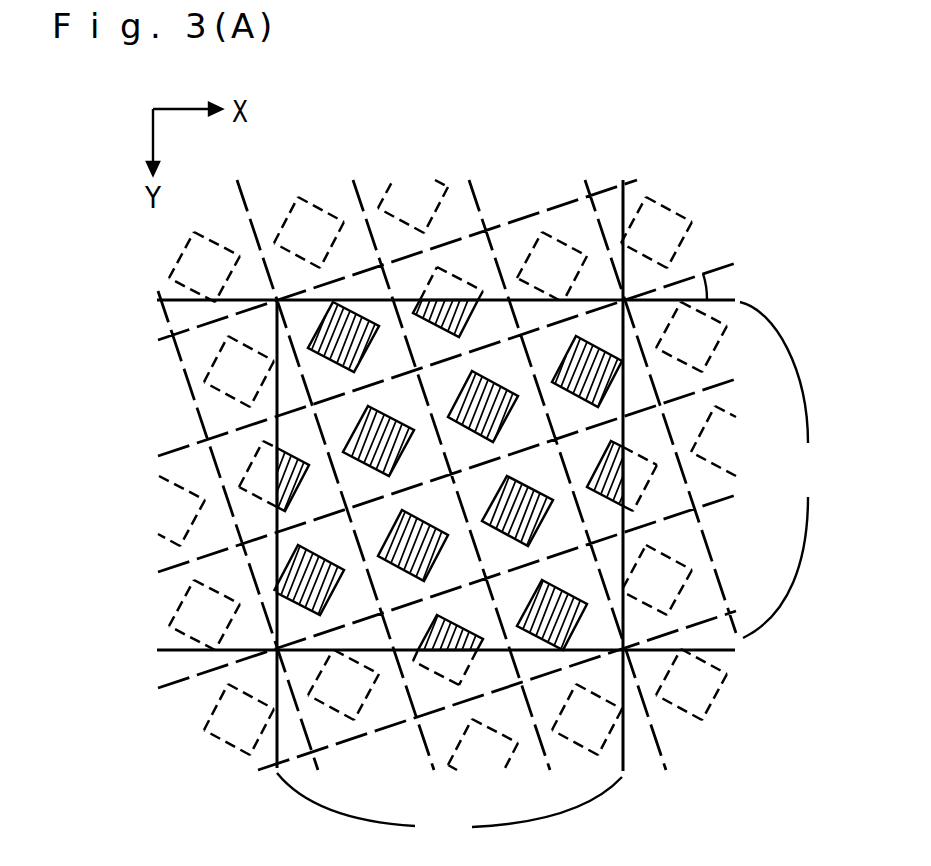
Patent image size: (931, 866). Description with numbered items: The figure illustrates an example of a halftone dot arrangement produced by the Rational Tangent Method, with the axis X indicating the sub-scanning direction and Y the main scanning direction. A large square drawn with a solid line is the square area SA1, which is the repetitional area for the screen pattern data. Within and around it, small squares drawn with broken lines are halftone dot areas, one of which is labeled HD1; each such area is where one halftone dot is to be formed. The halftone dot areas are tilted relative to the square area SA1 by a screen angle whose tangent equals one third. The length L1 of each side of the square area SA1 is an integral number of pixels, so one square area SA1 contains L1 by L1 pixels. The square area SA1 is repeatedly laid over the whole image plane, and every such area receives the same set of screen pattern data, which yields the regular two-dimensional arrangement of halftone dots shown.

The halftone dot area HD1 is at (407, 300).
The square area SA1 is at (587, 298).
The length of each side of the square area L1 is at (548, 573).